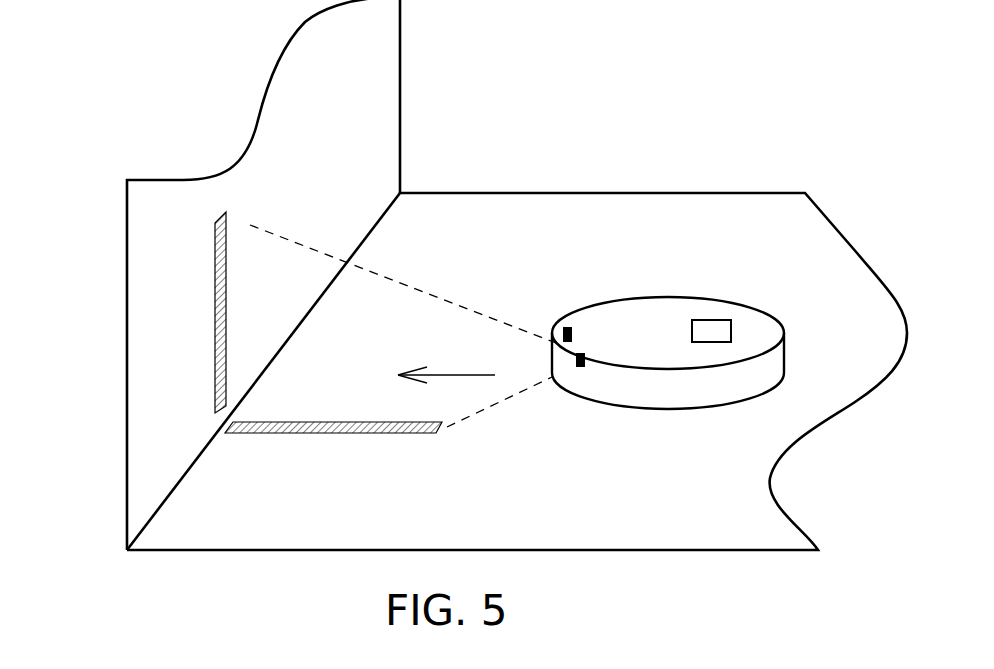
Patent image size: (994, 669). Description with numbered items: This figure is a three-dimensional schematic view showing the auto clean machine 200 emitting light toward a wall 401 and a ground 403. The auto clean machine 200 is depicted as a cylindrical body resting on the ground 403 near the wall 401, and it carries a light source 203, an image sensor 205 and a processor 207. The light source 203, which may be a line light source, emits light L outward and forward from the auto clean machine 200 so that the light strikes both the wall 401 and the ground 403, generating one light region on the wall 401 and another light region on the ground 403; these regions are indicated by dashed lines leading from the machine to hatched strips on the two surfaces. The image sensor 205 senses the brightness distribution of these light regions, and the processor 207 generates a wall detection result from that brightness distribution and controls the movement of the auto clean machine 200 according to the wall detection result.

The wall 401 is at (358, 154).
The ground 403 is at (768, 255).
The auto clean machine 200 is at (657, 325).
The light source 203 is at (581, 353).
The image sensor 205 is at (567, 327).
The processor 207 is at (710, 342).
The light L is at (446, 359).